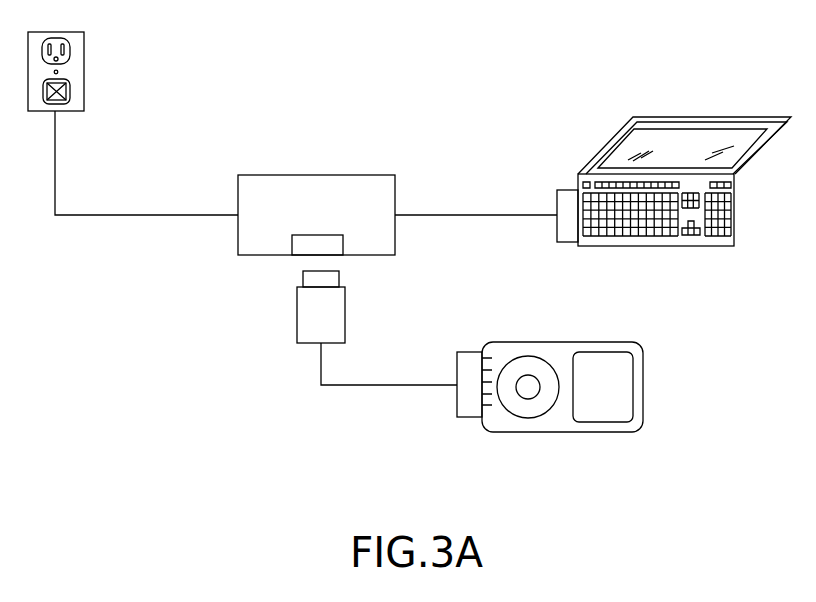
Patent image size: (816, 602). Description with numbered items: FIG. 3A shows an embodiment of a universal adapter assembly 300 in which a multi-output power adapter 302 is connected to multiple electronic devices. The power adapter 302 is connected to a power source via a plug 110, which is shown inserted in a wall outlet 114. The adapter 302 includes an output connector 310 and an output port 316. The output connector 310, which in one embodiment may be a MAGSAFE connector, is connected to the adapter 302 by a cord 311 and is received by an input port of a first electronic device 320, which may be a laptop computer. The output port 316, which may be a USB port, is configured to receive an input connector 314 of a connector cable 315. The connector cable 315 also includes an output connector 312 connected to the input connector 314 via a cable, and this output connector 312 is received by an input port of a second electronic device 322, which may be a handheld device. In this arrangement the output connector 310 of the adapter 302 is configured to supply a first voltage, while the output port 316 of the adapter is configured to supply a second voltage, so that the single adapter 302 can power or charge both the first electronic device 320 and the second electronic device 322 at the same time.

The universal adapter assembly 300 is at (712, 450).
The wall outlet 114 is at (84, 52).
The plug 110 is at (58, 89).
The power adapter 302 is at (313, 175).
The output port 316 is at (292, 244).
The cord 311 is at (476, 214).
The output connector 310 is at (564, 190).
The first electronic device 320 is at (597, 150).
The input connector 314 is at (345, 313).
The connector cable 315 is at (394, 385).
The output connector 312 is at (469, 352).
The second electronic device 322 is at (579, 342).